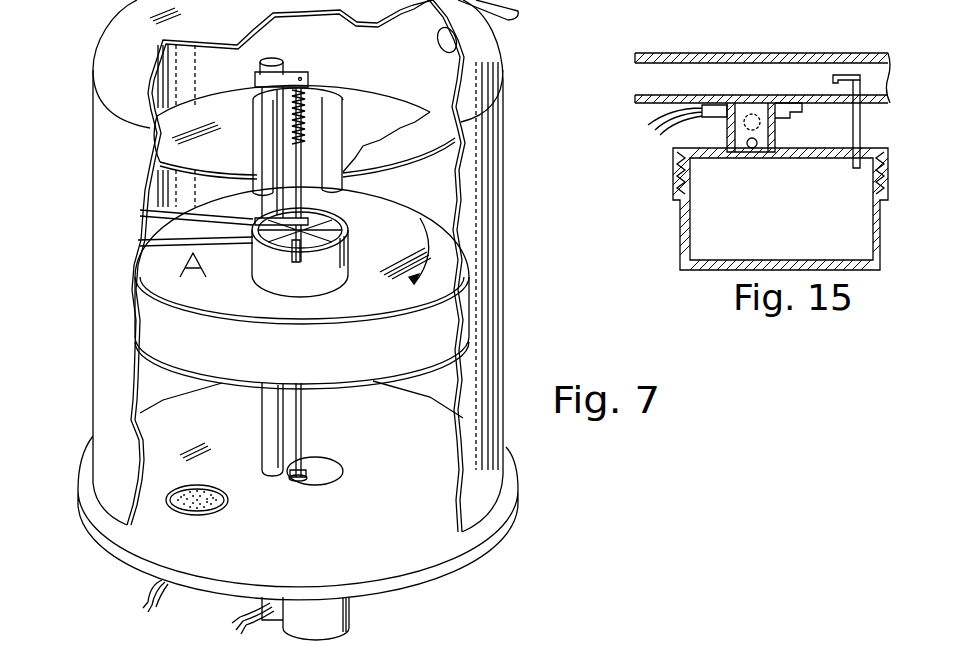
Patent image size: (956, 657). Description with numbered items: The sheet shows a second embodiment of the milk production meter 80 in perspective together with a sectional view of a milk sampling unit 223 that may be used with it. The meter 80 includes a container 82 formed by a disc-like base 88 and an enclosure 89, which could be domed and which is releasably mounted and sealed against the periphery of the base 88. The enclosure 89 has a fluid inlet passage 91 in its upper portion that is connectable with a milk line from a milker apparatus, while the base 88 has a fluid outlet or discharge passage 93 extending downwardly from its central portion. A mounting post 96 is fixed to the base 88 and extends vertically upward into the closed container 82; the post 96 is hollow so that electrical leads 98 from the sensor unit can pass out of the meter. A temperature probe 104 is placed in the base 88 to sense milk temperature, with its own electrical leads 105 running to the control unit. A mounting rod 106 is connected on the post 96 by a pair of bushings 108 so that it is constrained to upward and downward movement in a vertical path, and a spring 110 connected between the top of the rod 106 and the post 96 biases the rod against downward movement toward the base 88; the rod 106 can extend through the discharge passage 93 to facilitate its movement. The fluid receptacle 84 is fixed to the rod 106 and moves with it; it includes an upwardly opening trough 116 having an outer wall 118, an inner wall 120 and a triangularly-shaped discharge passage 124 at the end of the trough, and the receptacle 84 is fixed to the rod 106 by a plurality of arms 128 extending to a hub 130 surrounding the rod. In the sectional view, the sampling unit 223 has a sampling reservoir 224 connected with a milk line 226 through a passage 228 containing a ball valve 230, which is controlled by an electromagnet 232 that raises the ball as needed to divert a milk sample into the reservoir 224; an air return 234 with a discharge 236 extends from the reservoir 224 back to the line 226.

In FIG. 7, the milk production meter 80 is at (155, 511).
In FIG. 7, the container 82 is at (508, 160).
In FIG. 7, the fluid receptacle 84 is at (333, 365).
In FIG. 7, the base 88 is at (451, 562).
In FIG. 7, the enclosure 89 is at (105, 52).
In FIG. 7, the fluid inlet passage 91 is at (512, 20).
In FIG. 7, the fluid outlet passage 93 is at (343, 469).
In FIG. 7, the mounting post 96 is at (262, 414).
In FIG. 7, the electrical leads 98 is at (247, 618).
In FIG. 7, the temperature probe 104 is at (214, 507).
In FIG. 7, the electrical leads 105 is at (160, 579).
In FIG. 7, the mounting rod 106 is at (301, 420).
In FIG. 7, the bushings 108 is at (310, 214).
In FIG. 7, the spring 110 is at (294, 95).
In FIG. 7, the trough 116 is at (420, 392).
In FIG. 7, the outer wall 118 is at (192, 360).
In FIG. 7, the inner wall 120 is at (324, 283).
In FIG. 7, the discharge passage 124 is at (195, 283).
In FIG. 7, the arms 128 is at (340, 212).
In FIG. 7, the hub 130 is at (300, 254).
In FIG. 15, the milk sampling unit 223 is at (672, 141).
In FIG. 15, the sampling reservoir 224 is at (786, 238).
In FIG. 15, the milk line 226 is at (705, 68).
In FIG. 15, the passage 228 is at (777, 140).
In FIG. 15, the ball valve 230 is at (746, 137).
In FIG. 15, the electromagnet 232 is at (793, 118).
In FIG. 15, the air return 234 is at (862, 126).
In FIG. 15, the discharge 236 is at (840, 76).